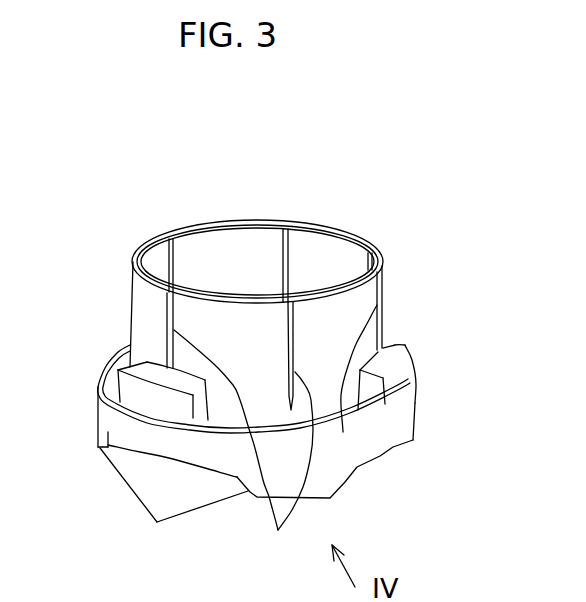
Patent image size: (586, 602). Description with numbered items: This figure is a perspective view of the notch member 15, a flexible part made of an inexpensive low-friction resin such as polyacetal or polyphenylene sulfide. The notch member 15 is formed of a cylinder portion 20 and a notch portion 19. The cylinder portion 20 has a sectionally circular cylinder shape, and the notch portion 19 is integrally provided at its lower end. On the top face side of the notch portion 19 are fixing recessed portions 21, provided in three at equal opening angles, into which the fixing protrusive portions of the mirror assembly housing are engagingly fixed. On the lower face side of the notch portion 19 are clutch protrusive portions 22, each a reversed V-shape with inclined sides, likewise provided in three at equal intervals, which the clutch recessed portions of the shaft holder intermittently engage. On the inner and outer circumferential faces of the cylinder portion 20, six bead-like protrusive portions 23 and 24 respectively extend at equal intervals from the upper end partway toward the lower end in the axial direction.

The notch member 15 is at (134, 234).
The notch portion 19 is at (386, 437).
The cylinder portion 20 is at (142, 318).
The fixing recessed portion 21 is at (350, 355).
The clutch protrusive portion 22 is at (157, 523).
The protrusive portion 23 is at (282, 254).
The protrusive portion 24 is at (382, 289).